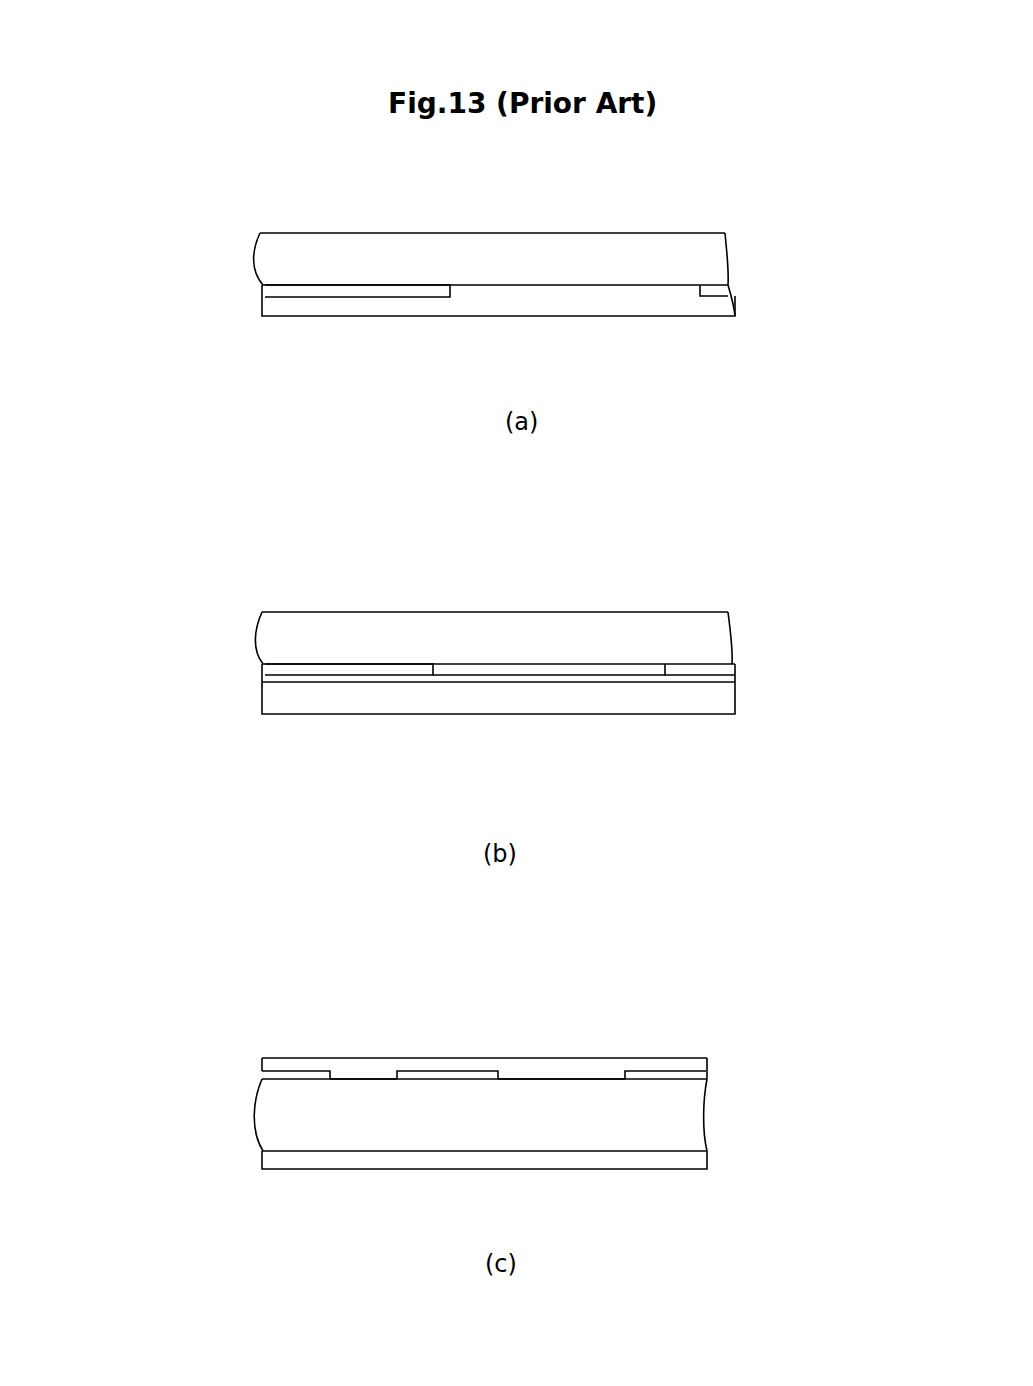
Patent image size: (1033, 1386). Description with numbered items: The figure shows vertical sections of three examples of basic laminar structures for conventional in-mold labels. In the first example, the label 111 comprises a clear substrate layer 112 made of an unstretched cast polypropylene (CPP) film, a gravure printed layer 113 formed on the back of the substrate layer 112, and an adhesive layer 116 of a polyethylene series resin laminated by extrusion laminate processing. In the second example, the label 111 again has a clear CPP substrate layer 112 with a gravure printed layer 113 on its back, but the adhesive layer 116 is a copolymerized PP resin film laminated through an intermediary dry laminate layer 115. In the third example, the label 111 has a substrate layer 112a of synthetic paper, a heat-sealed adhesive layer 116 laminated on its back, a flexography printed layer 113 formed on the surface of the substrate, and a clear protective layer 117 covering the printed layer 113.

The label 111 is at (709, 218).
The substrate layer 112 is at (700, 255).
The substrate layer 112a is at (668, 1121).
The printed layer 113 is at (358, 296).
The dry laminate layer 115 is at (540, 675).
The adhesive layer 116 is at (622, 302).
The protective layer 117 is at (552, 1072).